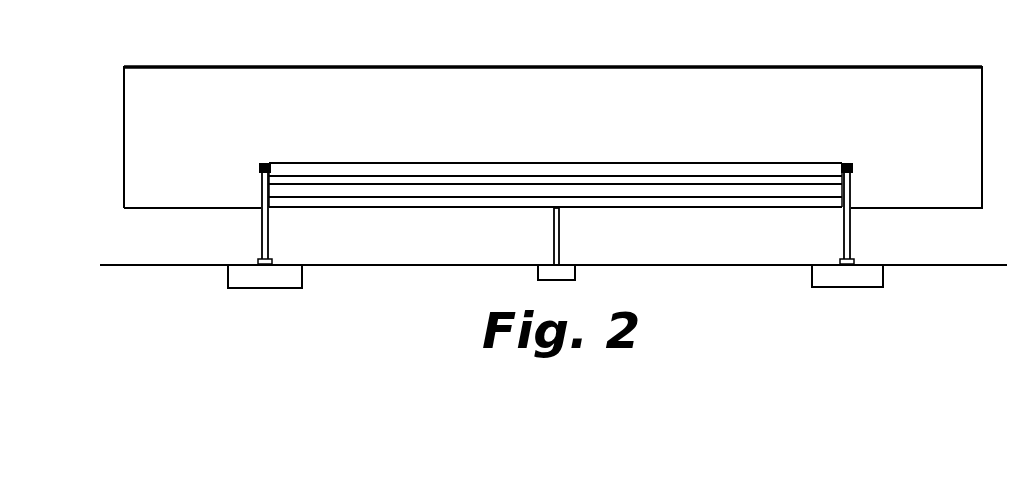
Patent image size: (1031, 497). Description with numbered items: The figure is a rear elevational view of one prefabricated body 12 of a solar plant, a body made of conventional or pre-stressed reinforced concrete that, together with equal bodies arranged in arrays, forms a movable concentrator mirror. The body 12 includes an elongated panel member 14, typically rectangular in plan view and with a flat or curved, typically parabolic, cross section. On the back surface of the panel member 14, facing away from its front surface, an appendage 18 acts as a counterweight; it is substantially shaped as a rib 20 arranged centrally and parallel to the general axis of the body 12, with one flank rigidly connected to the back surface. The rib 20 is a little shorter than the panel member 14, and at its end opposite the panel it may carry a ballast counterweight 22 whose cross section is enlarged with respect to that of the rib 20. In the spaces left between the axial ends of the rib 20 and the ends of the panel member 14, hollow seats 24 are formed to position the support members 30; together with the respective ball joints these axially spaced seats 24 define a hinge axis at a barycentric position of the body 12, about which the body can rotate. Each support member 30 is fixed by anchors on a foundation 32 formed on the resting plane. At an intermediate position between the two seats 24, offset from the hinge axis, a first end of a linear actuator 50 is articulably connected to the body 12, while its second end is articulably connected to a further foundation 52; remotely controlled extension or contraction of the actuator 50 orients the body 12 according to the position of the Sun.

The prefabricated body 12 is at (294, 52).
The panel member 14 is at (703, 88).
The appendage 18 is at (702, 150).
The rib 20 is at (583, 172).
The ballast counterweight 22 is at (520, 197).
The hollow seat 24 is at (258, 170).
The support member 30 is at (260, 238).
The foundation 32 is at (300, 278).
The linear actuator 50 is at (562, 233).
The foundation 52 is at (576, 270).